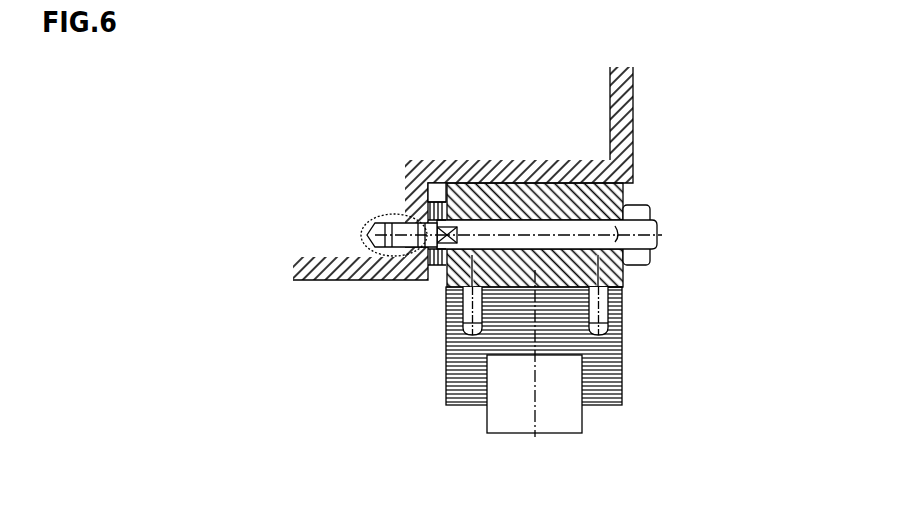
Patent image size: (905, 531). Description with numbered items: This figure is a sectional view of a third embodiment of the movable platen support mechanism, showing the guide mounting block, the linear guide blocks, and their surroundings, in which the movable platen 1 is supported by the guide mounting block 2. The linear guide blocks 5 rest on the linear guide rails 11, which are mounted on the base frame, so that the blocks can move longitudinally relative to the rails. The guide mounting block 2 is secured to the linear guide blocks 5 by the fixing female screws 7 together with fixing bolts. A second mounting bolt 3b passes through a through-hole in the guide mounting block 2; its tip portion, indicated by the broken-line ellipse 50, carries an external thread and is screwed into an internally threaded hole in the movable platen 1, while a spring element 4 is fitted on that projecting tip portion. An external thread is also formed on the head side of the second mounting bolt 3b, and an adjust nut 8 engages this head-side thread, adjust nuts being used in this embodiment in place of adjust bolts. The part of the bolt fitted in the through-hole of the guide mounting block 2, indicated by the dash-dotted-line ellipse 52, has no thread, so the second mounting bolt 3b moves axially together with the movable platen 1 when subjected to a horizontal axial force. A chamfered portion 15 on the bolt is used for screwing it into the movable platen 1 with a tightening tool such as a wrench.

The movable platen 1 is at (575, 143).
The guide mounting block 2 is at (625, 193).
The second mounting bolt 3b is at (657, 235).
The spring element 4 is at (422, 281).
The linear guide block 5 is at (622, 382).
The fixing female screw 7 is at (463, 310).
The adjust nut 8 is at (640, 265).
The linear guide rail 11 is at (547, 413).
The chamfered portion 15 is at (423, 207).
The broken-line ellipse 50 is at (360, 237).
The dash-dotted-line ellipse 52 is at (623, 289).